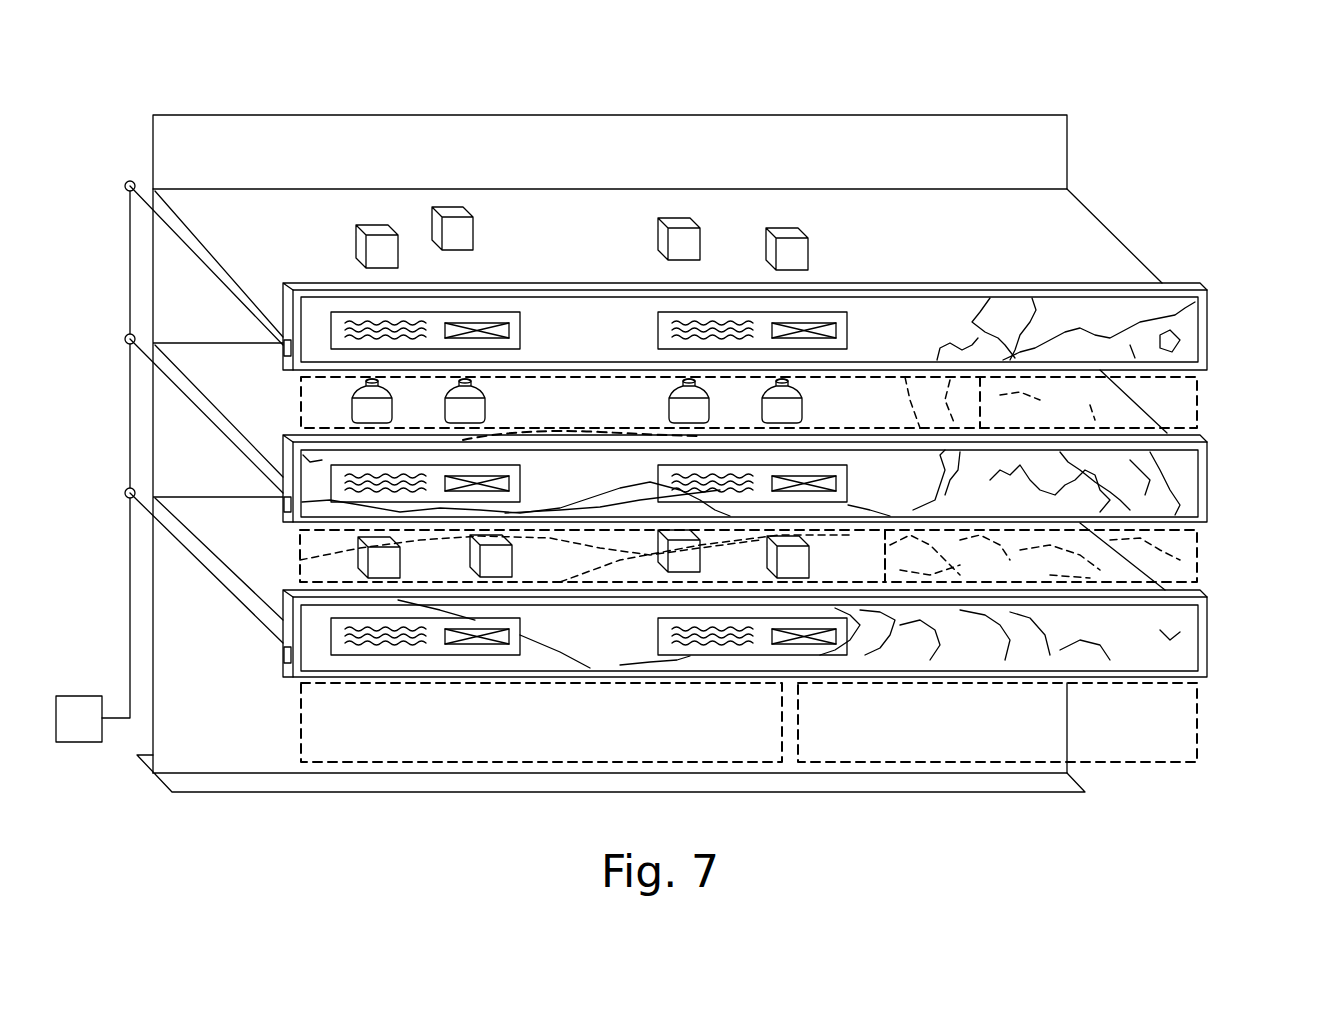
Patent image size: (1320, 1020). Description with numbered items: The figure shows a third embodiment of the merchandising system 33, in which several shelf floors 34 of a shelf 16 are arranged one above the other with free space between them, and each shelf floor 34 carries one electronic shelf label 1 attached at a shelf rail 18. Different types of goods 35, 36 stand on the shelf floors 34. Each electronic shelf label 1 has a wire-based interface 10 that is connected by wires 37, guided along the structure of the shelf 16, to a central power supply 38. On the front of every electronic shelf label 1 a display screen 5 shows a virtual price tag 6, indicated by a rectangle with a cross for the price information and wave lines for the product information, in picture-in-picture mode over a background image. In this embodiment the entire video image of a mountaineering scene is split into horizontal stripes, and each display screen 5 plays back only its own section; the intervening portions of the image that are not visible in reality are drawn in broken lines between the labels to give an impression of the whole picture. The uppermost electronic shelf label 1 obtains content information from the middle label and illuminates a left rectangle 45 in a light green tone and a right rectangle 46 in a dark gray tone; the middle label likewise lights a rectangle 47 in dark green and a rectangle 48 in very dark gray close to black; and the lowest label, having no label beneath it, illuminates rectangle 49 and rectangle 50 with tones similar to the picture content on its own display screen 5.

The electronic shelf label 1 is at (294, 286).
The display screen 5 is at (960, 290).
The virtual price tag 6 is at (520, 327).
The wire-based interface 10 is at (283, 340).
The shelf 16 is at (153, 148).
The shelf rail 18 is at (1210, 321).
The merchandising system 33 is at (1158, 131).
The shelf floor 34 is at (243, 246).
The goods 35 is at (385, 232).
The goods 36 is at (392, 406).
The wires 37 is at (207, 267).
The central power supply 38 is at (75, 742).
The left rectangle 45 is at (602, 377).
The right rectangle 46 is at (1200, 397).
The rectangle 47 is at (298, 538).
The rectangle 48 is at (1197, 553).
The rectangle 49 is at (455, 763).
The rectangle 50 is at (1200, 718).